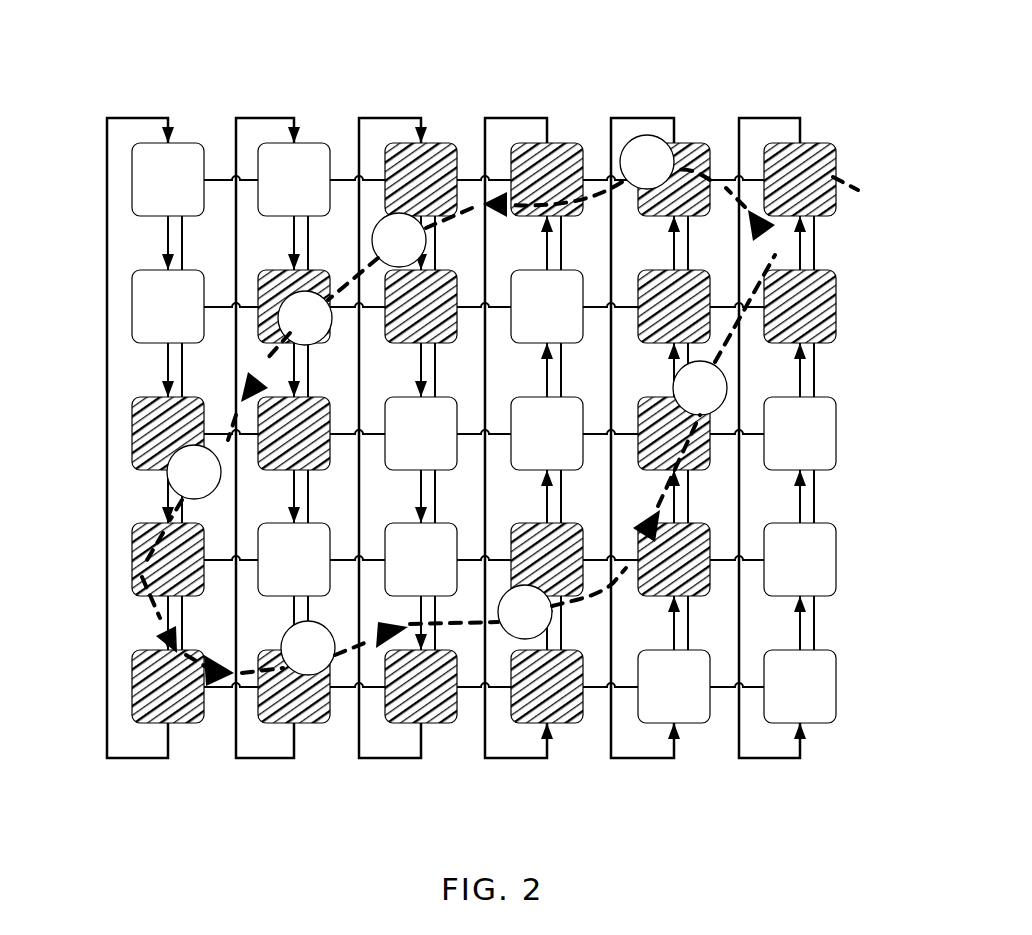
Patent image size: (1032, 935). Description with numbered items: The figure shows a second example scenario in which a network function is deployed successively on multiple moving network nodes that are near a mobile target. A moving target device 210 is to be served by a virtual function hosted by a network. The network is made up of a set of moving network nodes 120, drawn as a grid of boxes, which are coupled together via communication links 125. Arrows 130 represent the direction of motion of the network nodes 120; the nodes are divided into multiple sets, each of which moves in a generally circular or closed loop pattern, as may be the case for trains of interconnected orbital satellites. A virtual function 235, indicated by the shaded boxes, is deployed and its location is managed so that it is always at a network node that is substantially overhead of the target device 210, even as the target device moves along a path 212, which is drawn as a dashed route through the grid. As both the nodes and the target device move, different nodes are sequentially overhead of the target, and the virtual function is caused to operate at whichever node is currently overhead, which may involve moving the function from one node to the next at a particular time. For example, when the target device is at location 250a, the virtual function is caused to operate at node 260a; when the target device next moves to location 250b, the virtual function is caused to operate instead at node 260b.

The moving network nodes 120 is at (427, 430).
The communication links 125 is at (187, 242).
The arrows 130 is at (805, 243).
The moving target device 210 is at (650, 133).
The path 212 is at (720, 352).
The virtual function 235 is at (396, 702).
The location 250a is at (326, 327).
The location 250b is at (215, 481).
The node 260a is at (278, 289).
The node 260b is at (168, 428).